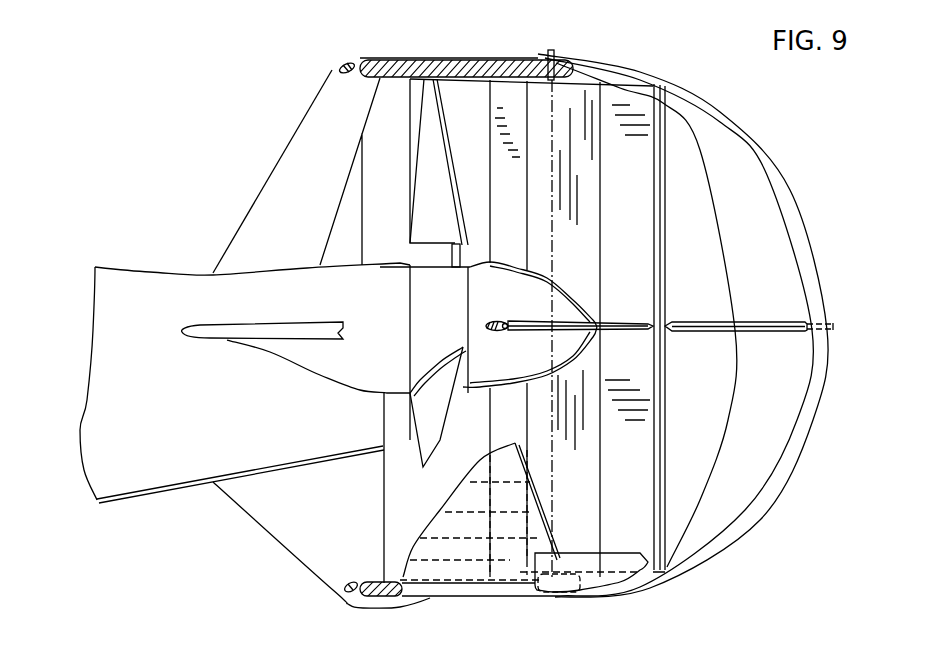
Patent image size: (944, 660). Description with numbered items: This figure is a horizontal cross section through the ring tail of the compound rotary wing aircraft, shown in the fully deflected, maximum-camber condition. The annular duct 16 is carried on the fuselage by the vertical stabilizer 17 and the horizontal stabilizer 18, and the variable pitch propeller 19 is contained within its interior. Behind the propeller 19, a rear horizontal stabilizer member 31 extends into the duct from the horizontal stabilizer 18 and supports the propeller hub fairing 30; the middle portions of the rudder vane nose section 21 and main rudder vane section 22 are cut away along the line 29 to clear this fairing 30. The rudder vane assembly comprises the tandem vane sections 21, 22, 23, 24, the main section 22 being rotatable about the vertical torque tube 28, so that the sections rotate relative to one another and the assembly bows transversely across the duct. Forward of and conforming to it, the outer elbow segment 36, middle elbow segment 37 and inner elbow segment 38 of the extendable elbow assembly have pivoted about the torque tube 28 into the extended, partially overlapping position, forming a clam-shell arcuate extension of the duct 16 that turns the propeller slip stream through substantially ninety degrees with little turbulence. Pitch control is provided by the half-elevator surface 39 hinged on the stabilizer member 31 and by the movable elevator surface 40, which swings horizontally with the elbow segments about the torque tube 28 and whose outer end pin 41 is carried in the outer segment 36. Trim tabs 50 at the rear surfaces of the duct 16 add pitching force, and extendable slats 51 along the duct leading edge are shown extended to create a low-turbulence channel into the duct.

The annular duct 16 is at (438, 58).
The vertical stabilizer 17 is at (252, 238).
The horizontal stabilizer 18 is at (265, 323).
The variable pitch propeller 19 is at (442, 322).
The rudder vane nose section 21 is at (516, 232).
The main rudder vane section 22 is at (589, 258).
The rudder vane section 23 is at (639, 241).
The rudder vane section 24 is at (661, 114).
The torque tube 28 is at (560, 42).
The cut-away line 29 is at (583, 298).
The propeller hub fairing 30 is at (490, 363).
The rear horizontal stabilizer member 31 is at (493, 319).
The outer elbow segment 36 is at (813, 233).
The middle elbow segment 37 is at (767, 175).
The inner elbow segment 38 is at (700, 150).
The half-elevator surface 39 is at (535, 320).
The movable elevator surface 40 is at (763, 320).
The pin 41 is at (833, 327).
The trim tab 50 is at (607, 580).
The extendable slat 51 is at (332, 67).